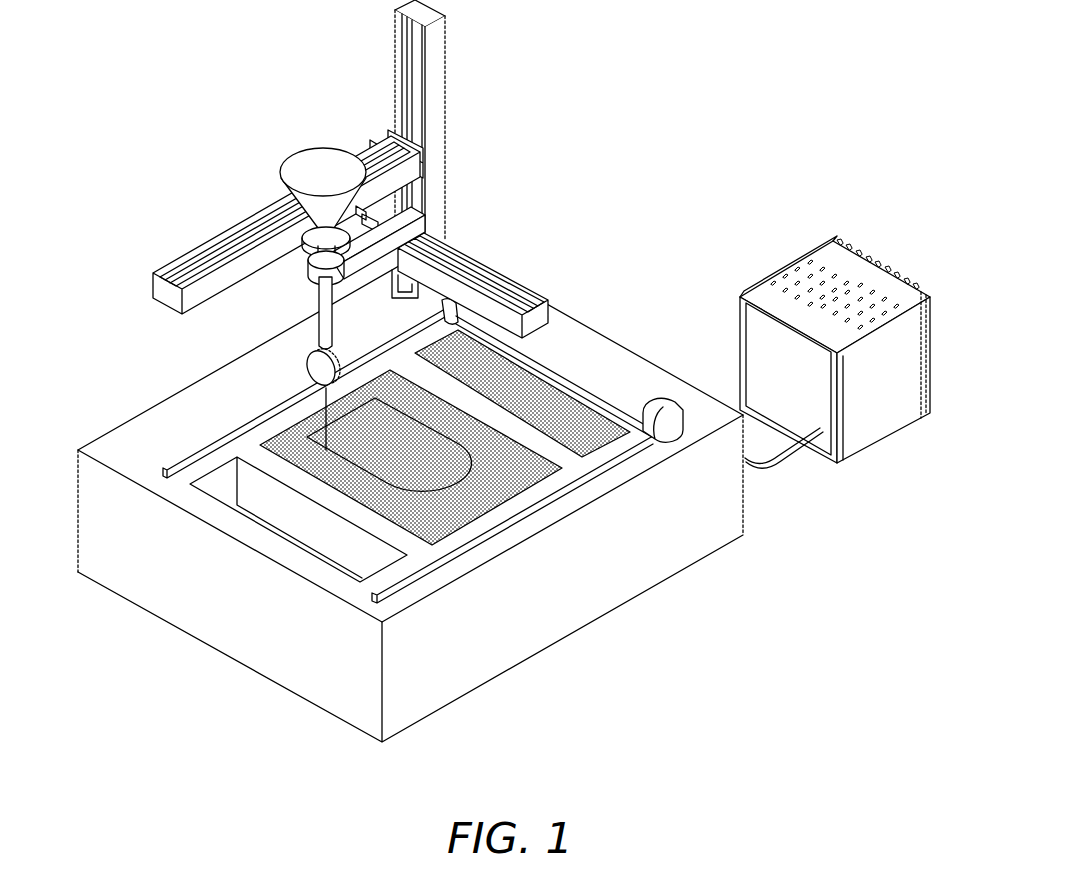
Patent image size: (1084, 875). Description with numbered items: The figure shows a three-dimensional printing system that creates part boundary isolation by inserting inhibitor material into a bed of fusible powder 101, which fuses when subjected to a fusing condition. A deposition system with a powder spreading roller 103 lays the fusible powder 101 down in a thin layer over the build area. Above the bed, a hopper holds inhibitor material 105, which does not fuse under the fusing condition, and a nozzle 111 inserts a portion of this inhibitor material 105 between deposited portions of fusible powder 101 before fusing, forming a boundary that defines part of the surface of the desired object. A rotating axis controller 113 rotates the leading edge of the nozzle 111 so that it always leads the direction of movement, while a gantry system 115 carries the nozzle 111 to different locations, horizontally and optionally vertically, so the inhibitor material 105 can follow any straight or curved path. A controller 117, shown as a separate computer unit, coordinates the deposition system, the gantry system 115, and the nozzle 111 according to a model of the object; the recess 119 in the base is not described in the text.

The fusible powder 101 is at (598, 437).
The powder spreading roller 103 is at (597, 377).
The inhibitor material 105 is at (322, 173).
The nozzle 111 is at (318, 332).
The rotating axis controller 113 is at (371, 228).
The gantry system 115 is at (447, 140).
The controller 117 is at (815, 250).
The recess slot 119 is at (313, 552).